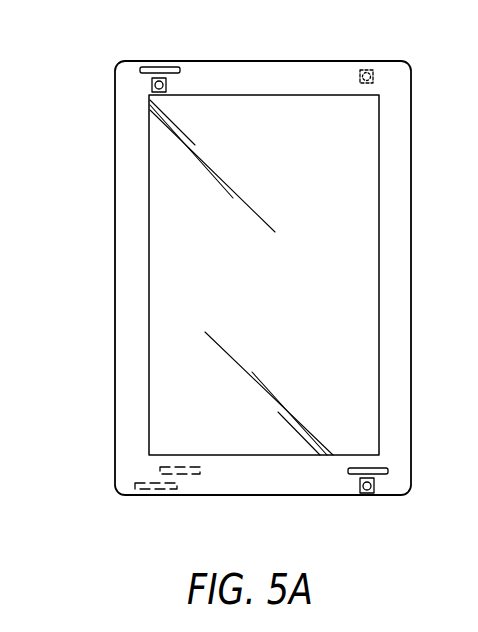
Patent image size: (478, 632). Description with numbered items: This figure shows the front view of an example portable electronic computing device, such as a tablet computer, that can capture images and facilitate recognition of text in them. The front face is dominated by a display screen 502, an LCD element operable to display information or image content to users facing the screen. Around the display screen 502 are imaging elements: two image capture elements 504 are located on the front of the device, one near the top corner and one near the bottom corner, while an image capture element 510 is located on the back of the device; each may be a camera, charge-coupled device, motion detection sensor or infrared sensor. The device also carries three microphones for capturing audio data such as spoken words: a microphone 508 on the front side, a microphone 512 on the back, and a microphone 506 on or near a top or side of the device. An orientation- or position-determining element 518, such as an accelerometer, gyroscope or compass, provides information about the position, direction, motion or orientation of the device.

The display screen 502 is at (149, 331).
The image capture element 504 is at (152, 84).
The microphone 506 is at (168, 68).
The microphone 508 is at (388, 470).
The image capture element 510 is at (363, 70).
The microphone 512 is at (188, 470).
The orientation- or position-determining element 518 is at (155, 490).